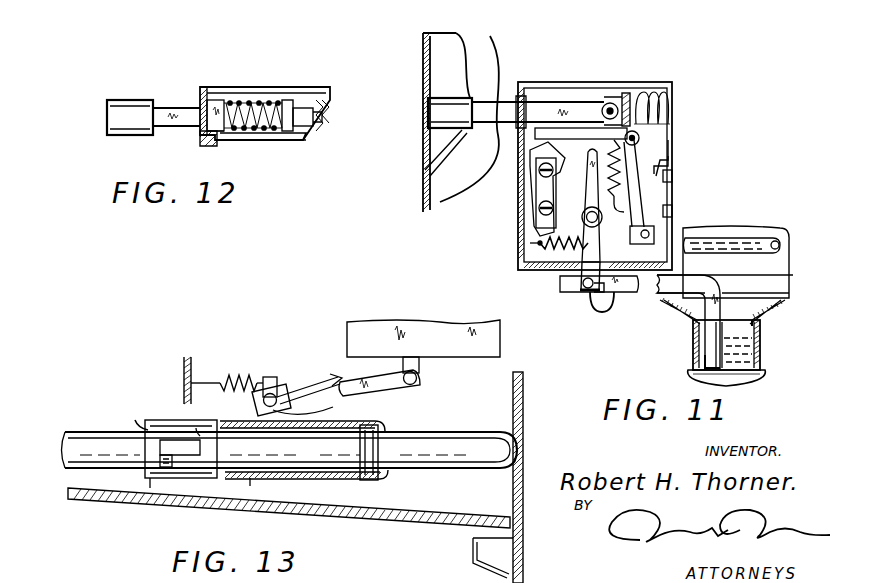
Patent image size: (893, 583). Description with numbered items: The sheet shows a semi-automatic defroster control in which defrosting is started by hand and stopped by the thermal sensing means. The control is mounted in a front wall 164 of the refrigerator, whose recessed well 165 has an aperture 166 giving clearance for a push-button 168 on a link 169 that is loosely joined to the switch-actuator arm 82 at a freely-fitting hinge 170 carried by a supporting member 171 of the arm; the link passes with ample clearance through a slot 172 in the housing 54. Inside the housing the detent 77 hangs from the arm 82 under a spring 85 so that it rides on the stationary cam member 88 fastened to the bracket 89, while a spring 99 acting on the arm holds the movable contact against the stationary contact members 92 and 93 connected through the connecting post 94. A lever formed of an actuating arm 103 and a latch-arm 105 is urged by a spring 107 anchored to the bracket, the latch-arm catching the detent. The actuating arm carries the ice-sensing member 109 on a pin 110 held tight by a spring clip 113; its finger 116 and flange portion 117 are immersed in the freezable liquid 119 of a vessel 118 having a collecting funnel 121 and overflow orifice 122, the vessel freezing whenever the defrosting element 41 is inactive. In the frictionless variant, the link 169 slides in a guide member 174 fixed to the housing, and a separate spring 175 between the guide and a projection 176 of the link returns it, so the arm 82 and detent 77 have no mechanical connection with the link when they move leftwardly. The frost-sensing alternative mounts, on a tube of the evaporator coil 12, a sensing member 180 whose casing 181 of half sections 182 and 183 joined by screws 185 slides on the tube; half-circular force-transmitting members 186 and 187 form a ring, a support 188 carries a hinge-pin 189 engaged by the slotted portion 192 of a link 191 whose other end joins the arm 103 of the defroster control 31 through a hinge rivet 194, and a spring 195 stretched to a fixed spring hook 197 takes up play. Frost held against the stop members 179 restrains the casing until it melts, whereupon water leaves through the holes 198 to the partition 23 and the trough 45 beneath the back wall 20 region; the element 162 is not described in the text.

In FIG. 11, the evaporator coil 12 is at (779, 240).
In FIG. 13, the evaporator coil 12 is at (466, 438).
In FIG. 13, the back wall 20 is at (513, 406).
In FIG. 13, the heat-insulating partition 23 is at (230, 508).
In FIG. 13, the defroster control 31 is at (345, 333).
In FIG. 11, the defrosting element 41 is at (778, 264).
In FIG. 13, the trough 45 is at (470, 562).
In FIG. 12, the housing 54 is at (252, 87).
In FIG. 11, the housing 54 is at (586, 88).
In FIG. 12, the detent 77 is at (248, 140).
In FIG. 11, the detent 77 is at (540, 133).
In FIG. 12, the switch-actuator arm 82 is at (313, 110).
In FIG. 11, the switch-actuator arm 82 is at (660, 190).
In FIG. 11, the spring 85 is at (626, 202).
In FIG. 11, the stationary cam member 88 is at (540, 150).
In FIG. 11, the bracket 89 is at (536, 198).
In FIG. 11, the stationary contact member 92 is at (672, 174).
In FIG. 11, the stationary contact member 93 is at (668, 146).
In FIG. 11, the connecting post 94 is at (672, 210).
In FIG. 12, the spring 99 is at (330, 99).
In FIG. 11, the spring 99 is at (668, 104).
In FIG. 11, the actuating arm 103 is at (581, 278).
In FIG. 13, the actuating arm 103 is at (419, 364).
In FIG. 11, the latch-arm 105 is at (585, 168).
In FIG. 11, the spring 107 is at (530, 245).
In FIG. 11, the ice-sensing member 109 is at (655, 294).
In FIG. 11, the pin 110 is at (583, 286).
In FIG. 11, the spring clip 113 is at (592, 308).
In FIG. 11, the finger 116 is at (708, 338).
In FIG. 11, the flange portion 117 is at (710, 352).
In FIG. 11, the vessel 118 is at (760, 346).
In FIG. 11, the freezable liquid 119 is at (764, 374).
In FIG. 11, the collecting funnel 121 is at (690, 312).
In FIG. 11, the overflow orifice 122 is at (760, 337).
In FIG. 11, the lever 162 is at (652, 212).
In FIG. 11, the front wall 164 is at (428, 190).
In FIG. 11, the recessed well 165 is at (465, 48).
In FIG. 11, the aperture 166 is at (492, 125).
In FIG. 12, the push-button 168 is at (123, 100).
In FIG. 11, the push-button 168 is at (498, 82).
In FIG. 12, the link 169 is at (186, 122).
In FIG. 11, the link 169 is at (548, 102).
In FIG. 11, the freely-fitting hinge 170 is at (612, 103).
In FIG. 11, the supporting member 171 is at (630, 95).
In FIG. 12, the slot 172 is at (207, 100).
In FIG. 11, the slot 172 is at (517, 96).
In FIG. 12, the guide member 174 is at (290, 100).
In FIG. 12, the spring 175 is at (270, 128).
In FIG. 12, the projection 176 is at (210, 146).
In FIG. 13, the stop member 179 is at (378, 479).
In FIG. 13, the sensing member 180 is at (148, 420).
In FIG. 13, the casing 181 is at (150, 488).
In FIG. 13, the half section 182 is at (135, 422).
In FIG. 13, the half section 183 is at (395, 478).
In FIG. 13, the screw 185 is at (172, 466).
In FIG. 13, the force-transmitting member 186 is at (320, 418).
In FIG. 13, the force-transmitting member 187 is at (252, 484).
In FIG. 13, the support 188 is at (262, 395).
In FIG. 13, the hinge-pin 189 is at (274, 393).
In FIG. 13, the link 191 is at (358, 380).
In FIG. 13, the slotted portion 192 is at (316, 376).
In FIG. 13, the hinge rivet 194 is at (402, 385).
In FIG. 13, the spring 195 is at (226, 380).
In FIG. 13, the spring hook 197 is at (192, 372).
In FIG. 13, the hole 198 is at (200, 436).